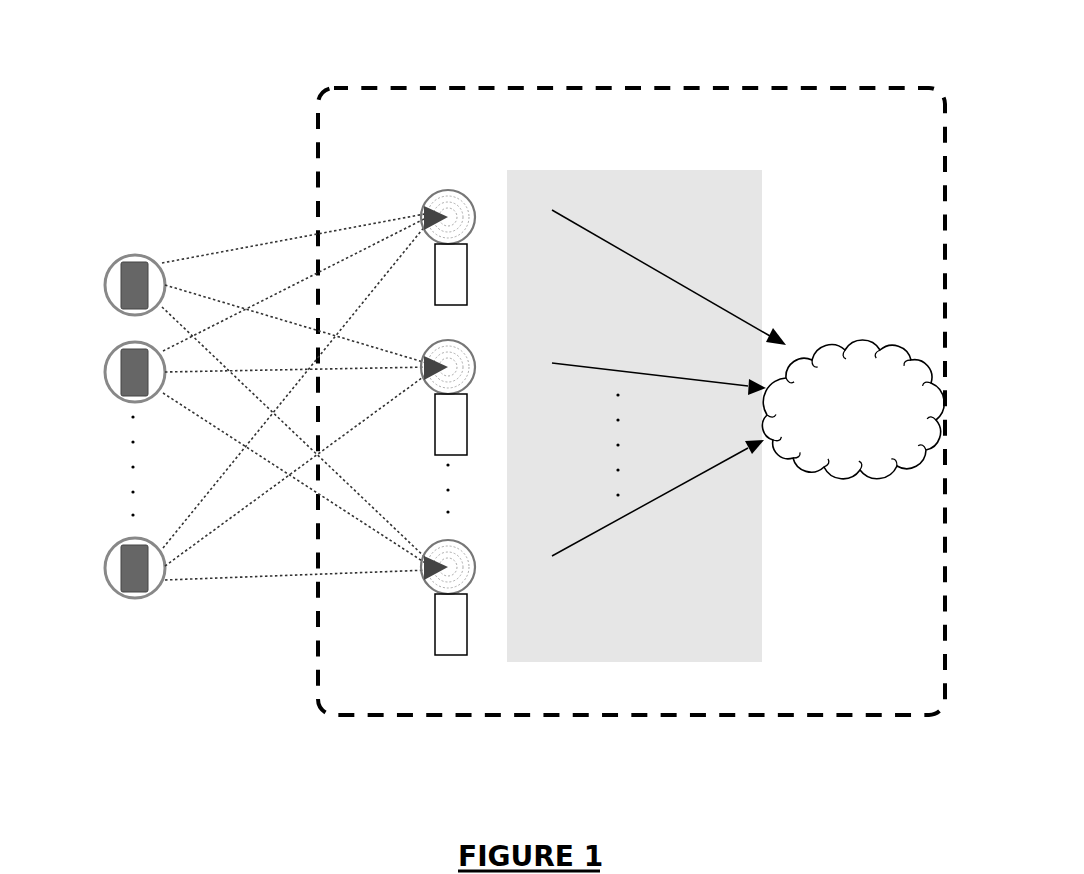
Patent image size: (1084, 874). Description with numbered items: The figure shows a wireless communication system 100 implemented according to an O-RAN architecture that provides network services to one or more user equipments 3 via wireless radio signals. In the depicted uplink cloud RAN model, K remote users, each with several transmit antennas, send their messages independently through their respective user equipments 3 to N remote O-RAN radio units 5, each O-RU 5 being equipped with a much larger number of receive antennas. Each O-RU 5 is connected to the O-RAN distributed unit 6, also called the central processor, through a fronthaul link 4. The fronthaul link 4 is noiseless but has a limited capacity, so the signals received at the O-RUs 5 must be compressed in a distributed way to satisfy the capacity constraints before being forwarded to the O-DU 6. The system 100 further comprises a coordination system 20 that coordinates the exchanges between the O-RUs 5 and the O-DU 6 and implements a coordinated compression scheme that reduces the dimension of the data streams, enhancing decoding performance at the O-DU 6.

The wireless communication system 100 is at (193, 37).
The coordination system 20 is at (420, 88).
The user equipment 3 is at (137, 262).
The O-RAN radio unit 5 is at (458, 191).
The fronthaul link 4 is at (625, 253).
The O-RAN distributed unit 6 is at (850, 355).